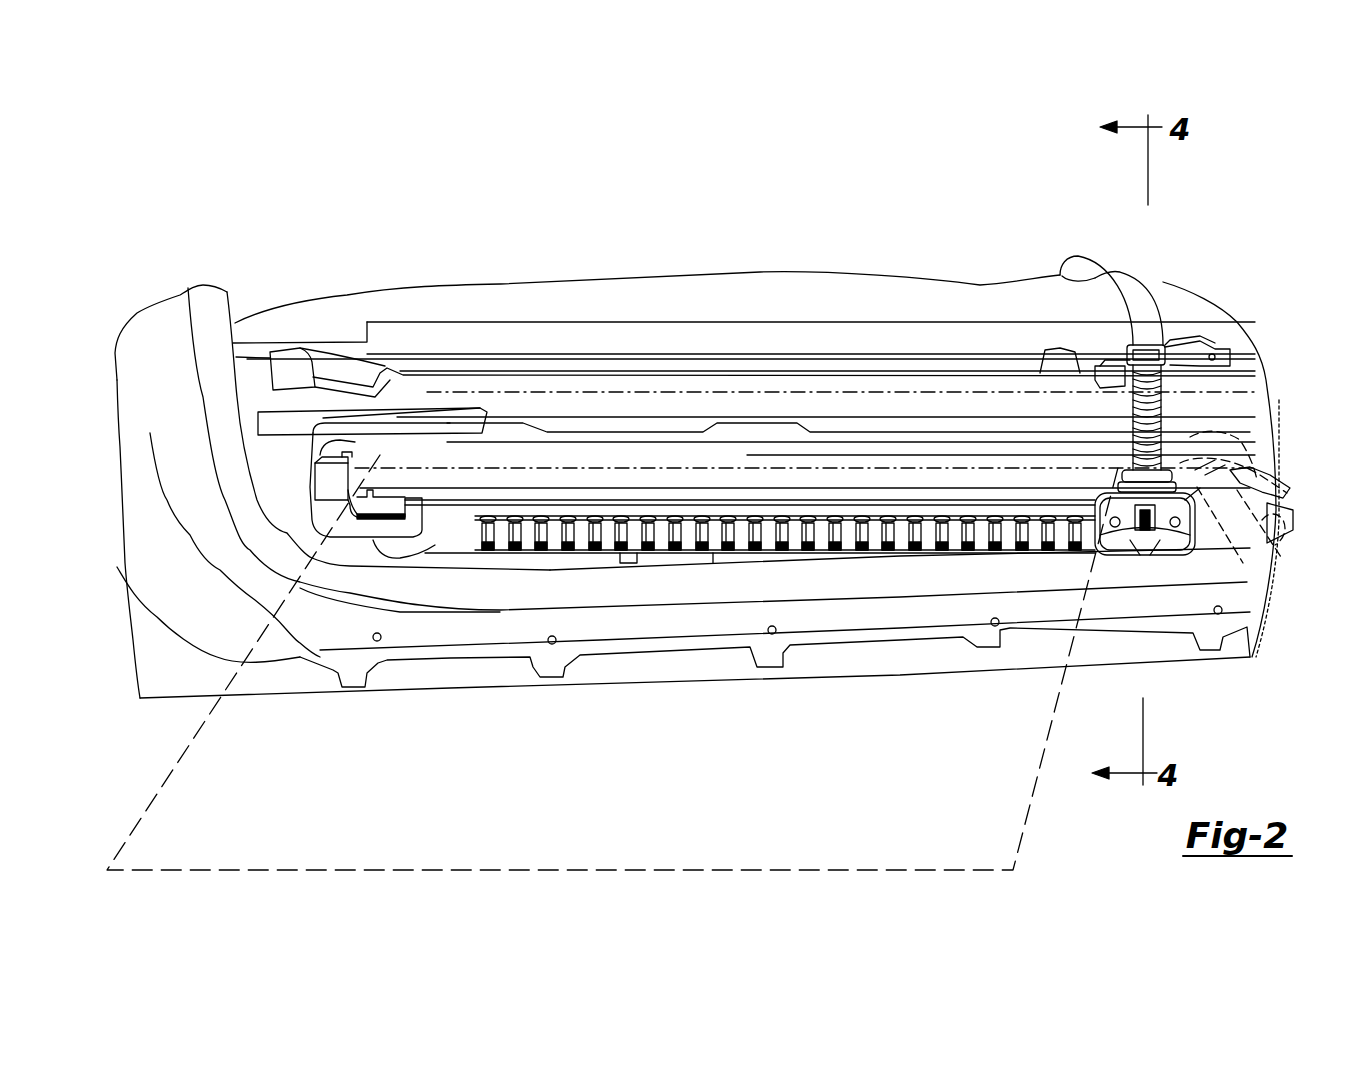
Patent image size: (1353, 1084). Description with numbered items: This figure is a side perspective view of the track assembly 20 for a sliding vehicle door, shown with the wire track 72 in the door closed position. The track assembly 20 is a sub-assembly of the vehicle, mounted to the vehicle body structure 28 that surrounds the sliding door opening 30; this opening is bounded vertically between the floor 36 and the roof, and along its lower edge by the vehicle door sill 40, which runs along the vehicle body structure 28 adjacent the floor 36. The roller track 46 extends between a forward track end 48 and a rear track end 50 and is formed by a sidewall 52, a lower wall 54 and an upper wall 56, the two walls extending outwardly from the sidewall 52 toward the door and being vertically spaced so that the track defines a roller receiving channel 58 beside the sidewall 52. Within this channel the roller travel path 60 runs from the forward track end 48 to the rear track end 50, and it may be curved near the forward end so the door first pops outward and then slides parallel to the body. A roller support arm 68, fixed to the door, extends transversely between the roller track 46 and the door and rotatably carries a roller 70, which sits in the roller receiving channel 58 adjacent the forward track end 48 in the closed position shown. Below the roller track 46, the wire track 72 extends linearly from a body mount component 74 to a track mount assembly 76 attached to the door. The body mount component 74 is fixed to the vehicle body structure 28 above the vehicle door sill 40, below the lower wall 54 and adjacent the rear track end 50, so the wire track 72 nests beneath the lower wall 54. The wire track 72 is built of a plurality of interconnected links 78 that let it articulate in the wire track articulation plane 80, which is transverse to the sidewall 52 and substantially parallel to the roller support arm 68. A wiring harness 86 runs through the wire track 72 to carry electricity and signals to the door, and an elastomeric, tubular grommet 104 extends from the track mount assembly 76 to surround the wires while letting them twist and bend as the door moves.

The track assembly 20 is at (739, 735).
The vehicle body structure 28 is at (277, 465).
The sliding door opening 30 is at (778, 258).
The floor 36 is at (843, 683).
The vehicle door sill 40 is at (513, 592).
The roller track 46 is at (583, 413).
The forward track end 48 is at (1290, 473).
The rear track end 50 is at (303, 517).
The sidewall 52 is at (727, 453).
The lower wall 54 is at (1257, 463).
The upper wall 56 is at (547, 432).
The roller receiving channel 58 is at (925, 462).
The roller travel path 60 is at (660, 470).
The roller support arm 68 is at (1280, 523).
The roller 70 is at (1253, 567).
The wire track 72 is at (945, 593).
The body mount component 74 is at (432, 543).
The track mount assembly 76 is at (1190, 567).
The interconnected links 78 is at (800, 540).
The wire track articulation plane 80 is at (1010, 840).
The wiring harness 86 is at (1105, 273).
The grommet 104 is at (1178, 393).